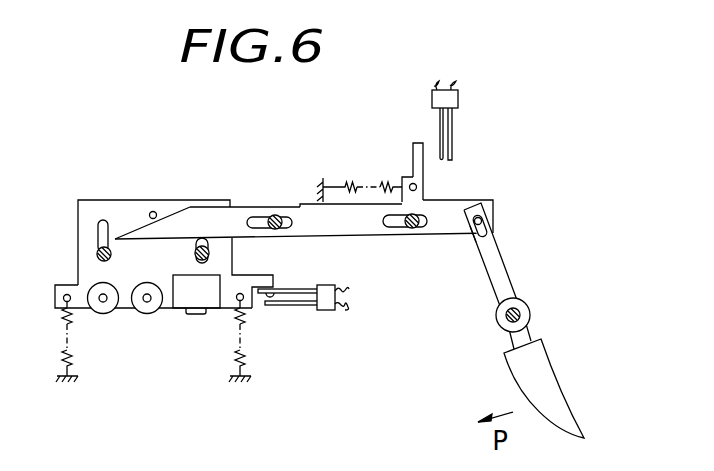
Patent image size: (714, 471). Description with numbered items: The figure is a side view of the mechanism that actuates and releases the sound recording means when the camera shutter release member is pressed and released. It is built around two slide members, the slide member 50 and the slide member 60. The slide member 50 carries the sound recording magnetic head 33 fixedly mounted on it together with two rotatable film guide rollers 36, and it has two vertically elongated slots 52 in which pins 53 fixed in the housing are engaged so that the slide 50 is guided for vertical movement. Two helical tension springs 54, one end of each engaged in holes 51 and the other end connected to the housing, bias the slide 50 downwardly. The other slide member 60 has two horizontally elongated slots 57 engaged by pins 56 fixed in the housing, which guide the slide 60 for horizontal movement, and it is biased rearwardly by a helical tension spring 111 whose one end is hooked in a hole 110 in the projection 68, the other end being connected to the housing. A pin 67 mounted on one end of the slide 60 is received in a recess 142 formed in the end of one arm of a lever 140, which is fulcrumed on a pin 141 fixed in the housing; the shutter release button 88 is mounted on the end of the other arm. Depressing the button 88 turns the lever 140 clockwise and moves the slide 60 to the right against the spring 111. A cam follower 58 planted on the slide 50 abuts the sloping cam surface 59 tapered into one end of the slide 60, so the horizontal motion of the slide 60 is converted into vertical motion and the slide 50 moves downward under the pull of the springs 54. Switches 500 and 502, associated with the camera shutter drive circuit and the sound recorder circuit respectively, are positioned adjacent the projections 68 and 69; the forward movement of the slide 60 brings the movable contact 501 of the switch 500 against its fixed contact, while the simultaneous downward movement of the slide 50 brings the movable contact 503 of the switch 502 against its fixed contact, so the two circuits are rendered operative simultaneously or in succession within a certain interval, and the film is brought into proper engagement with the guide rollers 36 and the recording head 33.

The sound recording magnetic head 33 is at (190, 290).
The film guide rollers 36 is at (105, 314).
The slide member 50 is at (76, 272).
The holes 51 is at (63, 305).
The vertically elongated slots 52 is at (98, 235).
The pins 53 is at (97, 255).
The helical tension springs 54 is at (62, 368).
The screws 56 is at (278, 218).
The horizontally elongated slots 57 is at (254, 218).
The cam follower 58 is at (152, 211).
The sloping cam surface 59 is at (140, 223).
The slide member 60 is at (203, 220).
The pin 67 is at (489, 221).
The projection 68 is at (415, 152).
The projection 69 is at (263, 276).
The shutter release button 88 is at (552, 407).
The hole 110 is at (420, 187).
The helical tension spring 111 is at (385, 177).
The lever 140 is at (502, 278).
The pin 141 is at (528, 318).
The recess 142 is at (473, 235).
The switch 500 is at (450, 99).
The movable contact 501 is at (452, 150).
The switch 502 is at (325, 300).
The movable contact 503 is at (284, 296).